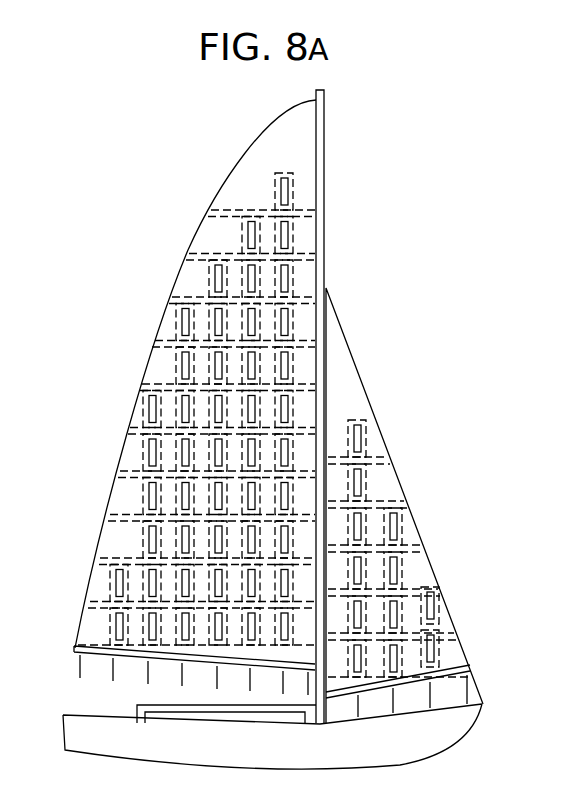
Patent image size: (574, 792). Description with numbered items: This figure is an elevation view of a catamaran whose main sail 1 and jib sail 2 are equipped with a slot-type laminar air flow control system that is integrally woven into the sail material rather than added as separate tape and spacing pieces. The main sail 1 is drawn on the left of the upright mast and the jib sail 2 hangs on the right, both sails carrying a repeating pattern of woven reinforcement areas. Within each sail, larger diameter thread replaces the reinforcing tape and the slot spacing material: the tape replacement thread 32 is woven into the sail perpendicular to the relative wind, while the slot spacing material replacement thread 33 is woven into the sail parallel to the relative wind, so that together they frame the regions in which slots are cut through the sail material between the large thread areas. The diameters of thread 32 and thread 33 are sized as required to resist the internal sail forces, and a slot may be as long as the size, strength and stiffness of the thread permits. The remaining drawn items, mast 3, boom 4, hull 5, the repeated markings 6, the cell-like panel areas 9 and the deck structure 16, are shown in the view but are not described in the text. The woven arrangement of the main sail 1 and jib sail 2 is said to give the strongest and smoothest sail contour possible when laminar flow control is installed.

The main sail 1 is at (247, 160).
The jib sail 2 is at (355, 356).
The mast 3 is at (327, 145).
The boom 4 is at (72, 648).
The hull 5 is at (470, 733).
The battery compartments 6 is at (275, 689).
The solar cell panels 9 is at (208, 273).
The cabin 16 is at (135, 704).
The tape replacement thread 32 is at (174, 357).
The slot spacing material replacement thread 33 is at (128, 457).